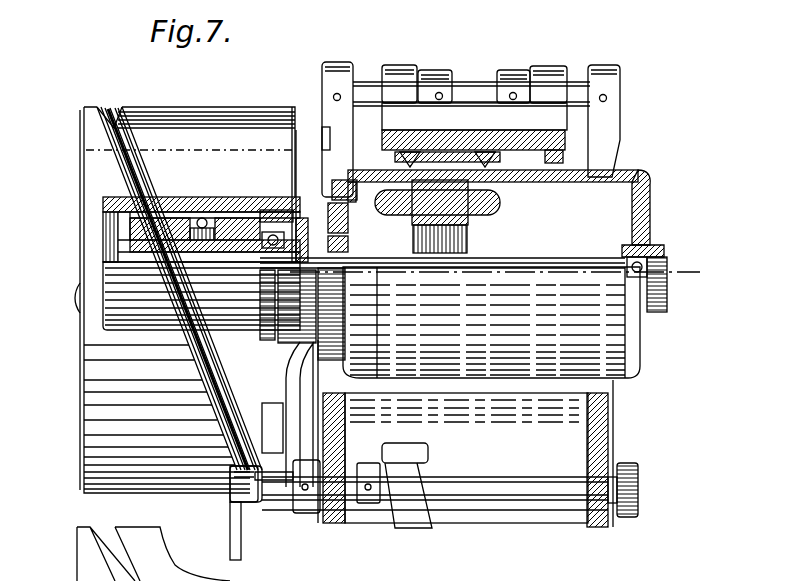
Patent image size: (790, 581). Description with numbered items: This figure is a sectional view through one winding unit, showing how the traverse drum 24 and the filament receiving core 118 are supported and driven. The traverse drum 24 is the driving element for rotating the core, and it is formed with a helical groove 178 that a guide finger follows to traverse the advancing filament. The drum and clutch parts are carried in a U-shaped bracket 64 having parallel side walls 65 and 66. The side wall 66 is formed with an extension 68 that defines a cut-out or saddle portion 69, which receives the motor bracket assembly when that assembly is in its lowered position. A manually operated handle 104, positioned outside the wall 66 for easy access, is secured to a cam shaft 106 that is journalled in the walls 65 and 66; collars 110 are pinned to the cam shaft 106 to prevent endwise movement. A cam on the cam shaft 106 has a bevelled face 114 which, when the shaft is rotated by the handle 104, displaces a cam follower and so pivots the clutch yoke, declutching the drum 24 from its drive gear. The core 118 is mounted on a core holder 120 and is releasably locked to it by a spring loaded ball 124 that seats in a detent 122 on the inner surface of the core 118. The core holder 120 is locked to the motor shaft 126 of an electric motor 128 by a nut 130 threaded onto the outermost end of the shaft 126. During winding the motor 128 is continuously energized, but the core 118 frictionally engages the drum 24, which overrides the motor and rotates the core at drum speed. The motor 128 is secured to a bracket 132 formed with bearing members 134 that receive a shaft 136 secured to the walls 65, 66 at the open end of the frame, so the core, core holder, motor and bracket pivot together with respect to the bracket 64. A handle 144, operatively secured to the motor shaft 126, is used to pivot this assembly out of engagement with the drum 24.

The traverse drum 24 is at (85, 410).
The U-shaped bracket 64 is at (475, 109).
The side wall 65 is at (618, 72).
The side wall 66 is at (332, 62).
The extension 68 is at (609, 422).
The saddle portion 69 is at (648, 380).
The handle 104 is at (230, 518).
The cam shaft 106 is at (512, 481).
The collars 110 is at (632, 487).
The bevelled face 114 is at (423, 513).
The filament receiving core 118 is at (103, 206).
The core holder 120 is at (128, 230).
The detent 122 is at (228, 207).
The spring loaded ball 124 is at (203, 218).
The motor shaft 126 is at (179, 256).
The electric motor 128 is at (508, 312).
The nut 130 is at (135, 250).
The bracket 132 is at (565, 140).
The bearing members 134 is at (402, 68).
The shaft 136 is at (367, 87).
The handle 144 is at (272, 403).
The helical groove 178 is at (110, 107).